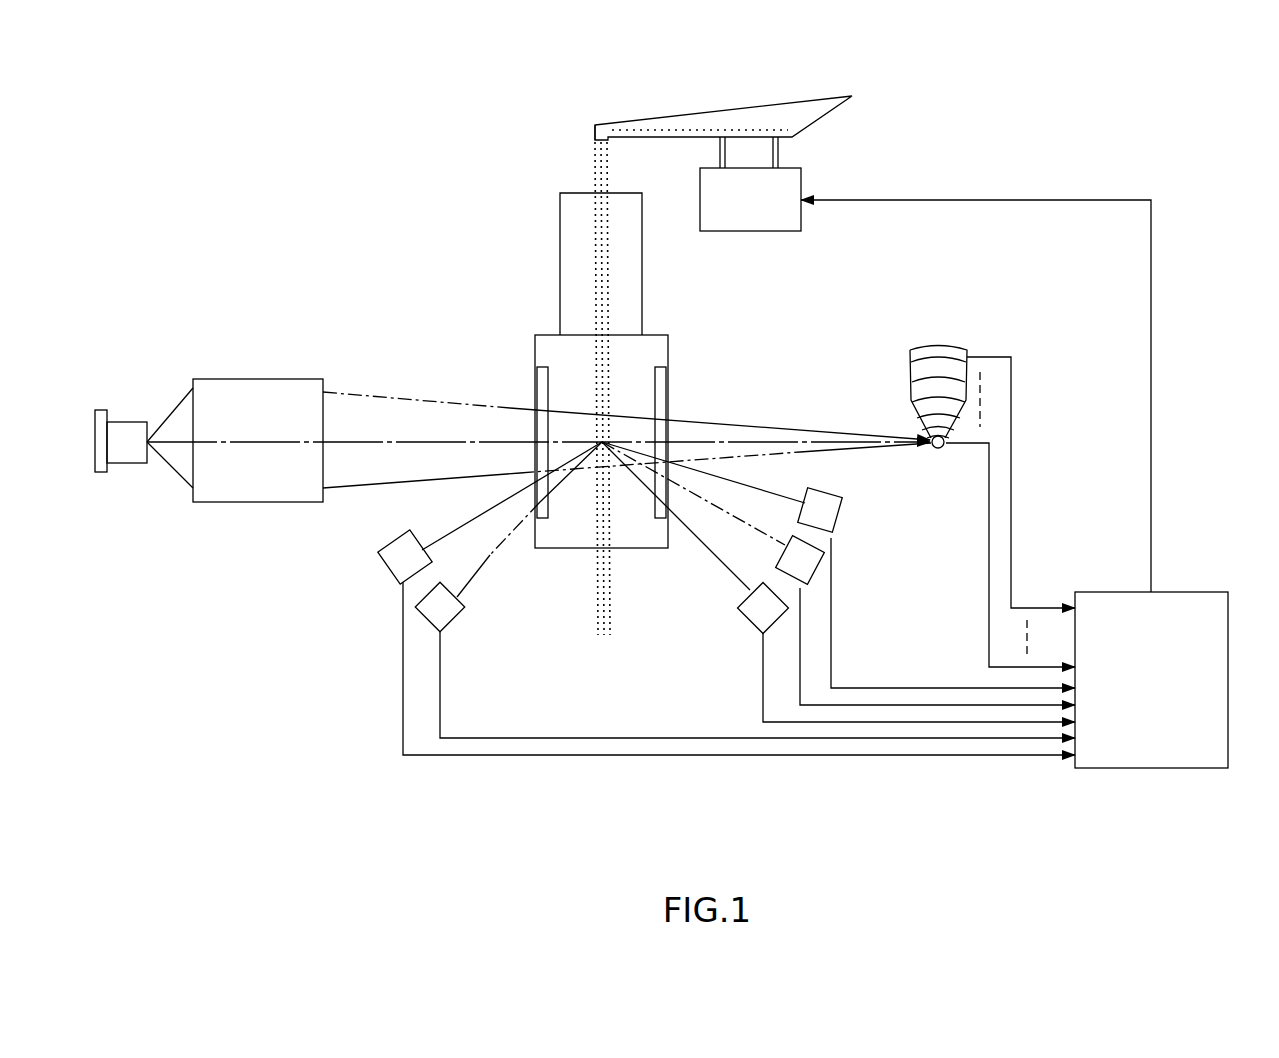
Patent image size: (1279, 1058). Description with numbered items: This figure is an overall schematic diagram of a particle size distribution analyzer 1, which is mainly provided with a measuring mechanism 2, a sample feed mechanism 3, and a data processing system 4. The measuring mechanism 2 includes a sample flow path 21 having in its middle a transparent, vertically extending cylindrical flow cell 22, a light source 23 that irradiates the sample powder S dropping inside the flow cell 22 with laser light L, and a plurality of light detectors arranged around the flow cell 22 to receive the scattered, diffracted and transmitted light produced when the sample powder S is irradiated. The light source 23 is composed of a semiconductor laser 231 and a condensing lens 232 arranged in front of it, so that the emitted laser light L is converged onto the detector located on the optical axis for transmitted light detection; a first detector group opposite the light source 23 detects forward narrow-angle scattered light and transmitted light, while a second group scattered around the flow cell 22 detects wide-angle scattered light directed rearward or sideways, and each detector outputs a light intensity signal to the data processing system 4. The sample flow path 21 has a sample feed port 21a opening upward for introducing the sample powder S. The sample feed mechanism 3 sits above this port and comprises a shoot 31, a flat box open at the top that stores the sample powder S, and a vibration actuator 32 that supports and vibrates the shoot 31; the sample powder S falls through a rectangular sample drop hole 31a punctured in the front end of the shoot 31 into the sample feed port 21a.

The particle analyzing apparatus 1 is at (447, 132).
The measuring mechanism 2 is at (373, 280).
The sample feed mechanism 3 is at (857, 140).
The data processing system 4 is at (1185, 592).
The sample flow path 21 is at (535, 313).
The sample feed port 21a is at (590, 193).
The flow cell 22 is at (535, 385).
The light source 23 is at (243, 365).
The shoot 31 is at (695, 110).
The sample drop hole 31a is at (595, 140).
The vibration actuator 32 is at (760, 232).
The semiconductor laser 231 is at (131, 464).
The condensing lens 232 is at (225, 502).
The sample powder S is at (610, 252).
The laser light L is at (539, 435).